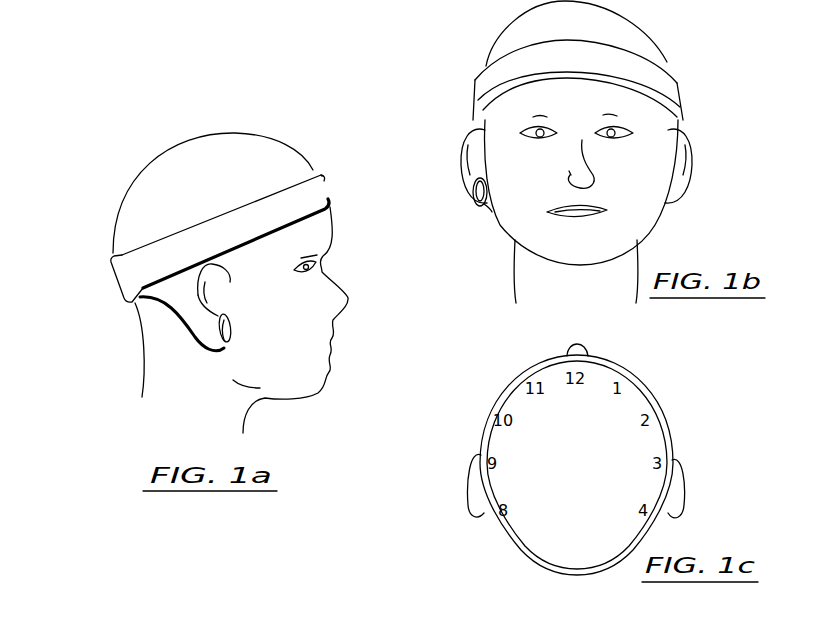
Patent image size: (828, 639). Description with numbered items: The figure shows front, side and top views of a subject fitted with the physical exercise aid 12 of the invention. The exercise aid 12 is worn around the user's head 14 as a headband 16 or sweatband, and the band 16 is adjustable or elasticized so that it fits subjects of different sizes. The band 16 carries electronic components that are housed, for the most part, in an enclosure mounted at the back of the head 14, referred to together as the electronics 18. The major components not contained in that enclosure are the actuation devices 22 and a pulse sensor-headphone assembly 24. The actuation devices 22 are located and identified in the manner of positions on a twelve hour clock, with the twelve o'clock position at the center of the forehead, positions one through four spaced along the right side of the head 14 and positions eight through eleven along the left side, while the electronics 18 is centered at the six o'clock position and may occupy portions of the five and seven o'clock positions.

In FIG. 1A, the physical exercise aid 12 is at (104, 290).
In FIG. 1A, the user's head 14 is at (194, 137).
In FIG. 1A, the headband 16 is at (164, 228).
In FIG. 1A, the electronics 18 is at (123, 310).
In FIG. 1A, the actuation devices 22 is at (340, 180).
In FIG. 1B, the actuation devices 22 is at (462, 93).
In FIG. 1A, the pulse sensor-headphone assembly 24 is at (237, 348).
In FIG. 1B, the pulse sensor-headphone assembly 24 is at (473, 207).